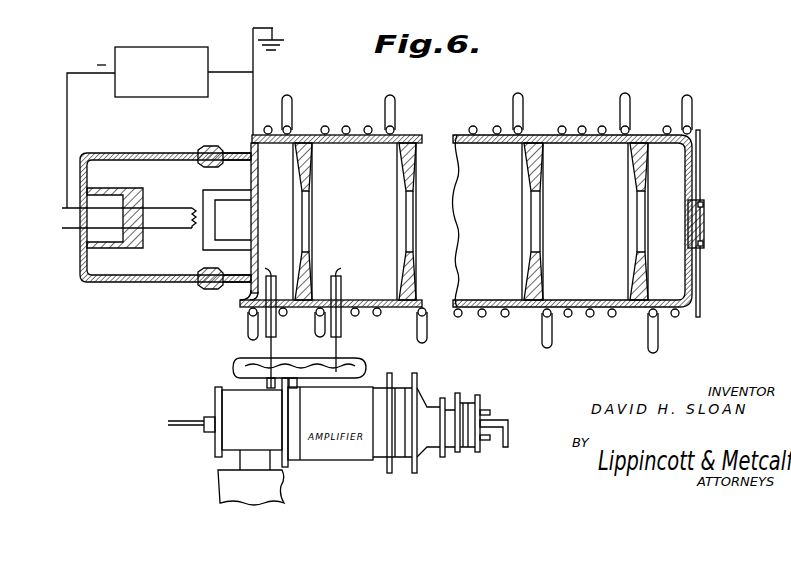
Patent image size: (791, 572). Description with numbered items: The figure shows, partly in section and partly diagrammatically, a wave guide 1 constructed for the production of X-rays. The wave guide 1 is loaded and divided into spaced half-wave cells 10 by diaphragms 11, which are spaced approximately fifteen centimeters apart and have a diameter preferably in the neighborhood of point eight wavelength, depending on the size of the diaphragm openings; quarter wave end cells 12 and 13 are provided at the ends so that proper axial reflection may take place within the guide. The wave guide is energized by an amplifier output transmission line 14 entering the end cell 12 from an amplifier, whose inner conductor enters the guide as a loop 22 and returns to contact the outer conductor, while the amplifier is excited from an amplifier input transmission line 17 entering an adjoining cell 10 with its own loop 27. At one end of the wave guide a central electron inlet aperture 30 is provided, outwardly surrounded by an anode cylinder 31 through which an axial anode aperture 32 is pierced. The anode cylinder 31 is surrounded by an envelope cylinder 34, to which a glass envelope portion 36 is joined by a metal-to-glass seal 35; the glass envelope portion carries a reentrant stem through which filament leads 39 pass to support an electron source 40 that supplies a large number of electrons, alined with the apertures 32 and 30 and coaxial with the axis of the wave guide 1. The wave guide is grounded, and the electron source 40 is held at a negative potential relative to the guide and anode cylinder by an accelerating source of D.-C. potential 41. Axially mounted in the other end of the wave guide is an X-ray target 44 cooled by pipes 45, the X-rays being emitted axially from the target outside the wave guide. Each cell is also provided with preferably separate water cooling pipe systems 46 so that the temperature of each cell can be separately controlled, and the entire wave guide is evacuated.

The wave guide 1 is at (468, 133).
The half-wave cells 10 is at (362, 213).
The diaphragms 11 is at (398, 158).
The quarter wave end cell 12 is at (262, 148).
The quarter wave end cell 13 is at (673, 157).
The amplifier output transmission line 14 is at (243, 362).
The amplifier input transmission line 17 is at (345, 355).
The loop 22 is at (272, 314).
The loop 27 is at (339, 306).
The central electron inlet aperture 30 is at (252, 213).
The anode cylinder 31 is at (242, 153).
The axial anode aperture 32 is at (207, 200).
The envelope cylinder 34 is at (233, 284).
The metal-to-glass seal 35 is at (213, 289).
The glass envelope portion 36 is at (138, 152).
The filament leads 39 is at (71, 230).
The electron source 40 is at (192, 218).
The accelerating source of D.-C. potential 41 is at (193, 49).
The X-ray target 44 is at (704, 212).
The pipes 45 is at (701, 140).
The water cooling pipe systems 46 is at (397, 108).